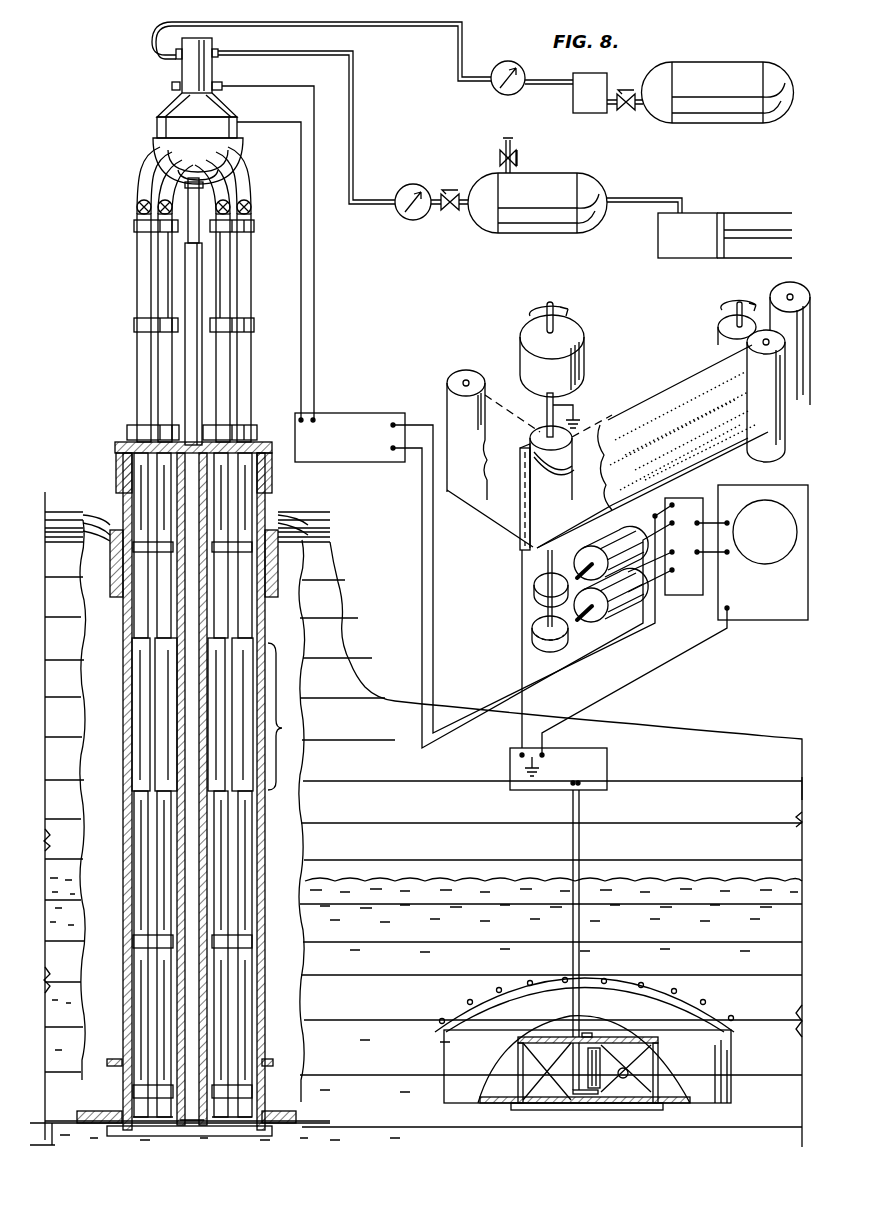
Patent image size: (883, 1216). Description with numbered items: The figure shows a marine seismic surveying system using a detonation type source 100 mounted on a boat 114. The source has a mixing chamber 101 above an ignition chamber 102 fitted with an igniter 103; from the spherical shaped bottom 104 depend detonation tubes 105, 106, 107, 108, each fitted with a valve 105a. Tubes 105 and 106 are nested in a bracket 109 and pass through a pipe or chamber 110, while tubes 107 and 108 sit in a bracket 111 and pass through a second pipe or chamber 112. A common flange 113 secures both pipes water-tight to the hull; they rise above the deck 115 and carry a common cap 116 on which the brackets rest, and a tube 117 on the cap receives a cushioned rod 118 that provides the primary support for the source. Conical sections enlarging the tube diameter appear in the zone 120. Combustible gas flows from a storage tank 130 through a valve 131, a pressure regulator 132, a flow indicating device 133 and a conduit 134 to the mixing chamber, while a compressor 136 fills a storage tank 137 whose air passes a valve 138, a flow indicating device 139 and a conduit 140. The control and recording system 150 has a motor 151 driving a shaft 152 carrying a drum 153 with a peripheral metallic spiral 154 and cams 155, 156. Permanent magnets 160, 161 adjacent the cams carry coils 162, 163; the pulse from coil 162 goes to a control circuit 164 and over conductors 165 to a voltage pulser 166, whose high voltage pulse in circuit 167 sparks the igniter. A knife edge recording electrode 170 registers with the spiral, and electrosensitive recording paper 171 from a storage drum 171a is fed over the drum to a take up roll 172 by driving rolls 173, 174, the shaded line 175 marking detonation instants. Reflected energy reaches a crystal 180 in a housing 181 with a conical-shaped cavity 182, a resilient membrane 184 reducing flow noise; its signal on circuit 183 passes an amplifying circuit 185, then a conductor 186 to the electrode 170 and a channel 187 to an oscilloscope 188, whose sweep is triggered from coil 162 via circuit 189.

The detonation type source 100 is at (197, 241).
The mixing chamber 101 is at (203, 70).
The ignition chamber 102 is at (232, 112).
The igniter 103 is at (222, 89).
The spherical shaped bottom 104 is at (244, 147).
The tube 105 is at (142, 250).
The valve 105a is at (165, 200).
The tube 106 is at (168, 277).
The tube 107 is at (222, 245).
The tube 108 is at (246, 260).
The bracket 109 is at (132, 430).
The pipe or chamber 110 is at (124, 648).
The bracket 111 is at (252, 430).
The second pipe or chamber 112 is at (262, 622).
The flange 113 is at (110, 1136).
The boat 114 is at (180, 1145).
The deck 115 is at (282, 520).
The cap 116 is at (272, 481).
The tube 117 is at (198, 365).
The rod 118 is at (198, 200).
The zone 120 is at (225, 714).
The storage tank 130 is at (730, 93).
The valve 131 is at (627, 110).
The pressure regulator 132 is at (585, 107).
The flow indicating device 133 is at (513, 90).
The conduit 134 is at (452, 41).
The compressor 136 is at (725, 235).
The storage tank 137 is at (550, 201).
The valve 138 is at (449, 212).
The flow indicating device 139 is at (405, 216).
The conduit 140 is at (357, 125).
The control and recording system 150 is at (655, 349).
The motor 151 is at (573, 325).
The shaft 152 is at (547, 407).
The drum 153 is at (548, 436).
The peripheral metallic spiral 154 is at (560, 462).
The cam 155 is at (554, 580).
The cam 156 is at (532, 635).
The permanent magnet 160 is at (600, 553).
The permanent magnet 161 is at (582, 617).
The coil 162 is at (615, 532).
The coil 163 is at (615, 596).
The control circuit 164 is at (675, 508).
The conductors 165 is at (430, 683).
The voltage pulser 166 is at (368, 446).
The circuit 167 is at (303, 300).
The recording electrode 170 is at (520, 548).
The electrosensitive recording paper 171 is at (605, 495).
The storage drum 171a is at (467, 381).
The take up roll 172 is at (790, 290).
The driving roll 173 is at (718, 337).
The driving roll 174 is at (800, 420).
The shaded line 175 is at (668, 390).
The crystal 180 is at (600, 1070).
The housing 181 is at (488, 1039).
The conical-shaped cavity 182 is at (629, 1072).
The circuit 183 is at (580, 857).
The resilient membrane 184 is at (578, 1104).
The amplifying circuit 185 is at (580, 757).
The conductor 186 is at (522, 578).
The channel 187 is at (625, 687).
The oscilloscope 188 is at (758, 610).
The circuit 189 is at (713, 535).